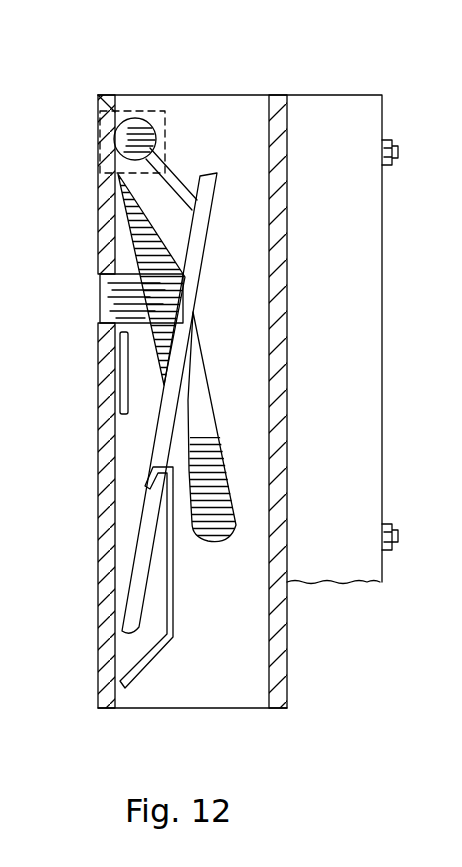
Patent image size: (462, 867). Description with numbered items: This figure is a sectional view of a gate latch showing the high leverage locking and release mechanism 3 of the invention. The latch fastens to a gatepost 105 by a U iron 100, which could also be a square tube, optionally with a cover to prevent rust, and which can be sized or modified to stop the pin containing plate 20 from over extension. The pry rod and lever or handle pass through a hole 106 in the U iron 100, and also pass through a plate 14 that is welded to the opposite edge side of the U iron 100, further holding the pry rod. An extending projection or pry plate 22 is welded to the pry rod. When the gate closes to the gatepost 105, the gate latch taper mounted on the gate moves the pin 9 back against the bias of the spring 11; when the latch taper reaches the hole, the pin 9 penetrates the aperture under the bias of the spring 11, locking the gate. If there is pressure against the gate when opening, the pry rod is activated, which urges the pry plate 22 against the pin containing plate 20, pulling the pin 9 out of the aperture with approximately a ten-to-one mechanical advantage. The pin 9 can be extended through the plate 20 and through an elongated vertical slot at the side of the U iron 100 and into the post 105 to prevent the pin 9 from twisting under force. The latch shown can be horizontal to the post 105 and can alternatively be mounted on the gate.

The high leverage locking and release mechanism 3 is at (223, 334).
The pin 9 is at (103, 300).
The spring 11 is at (148, 663).
The plate 14 is at (156, 112).
The pin containing plate 20 is at (202, 267).
The pry plate 22 is at (175, 176).
The U iron 100 is at (100, 622).
The gatepost 105 is at (308, 94).
The hole 106 is at (99, 94).